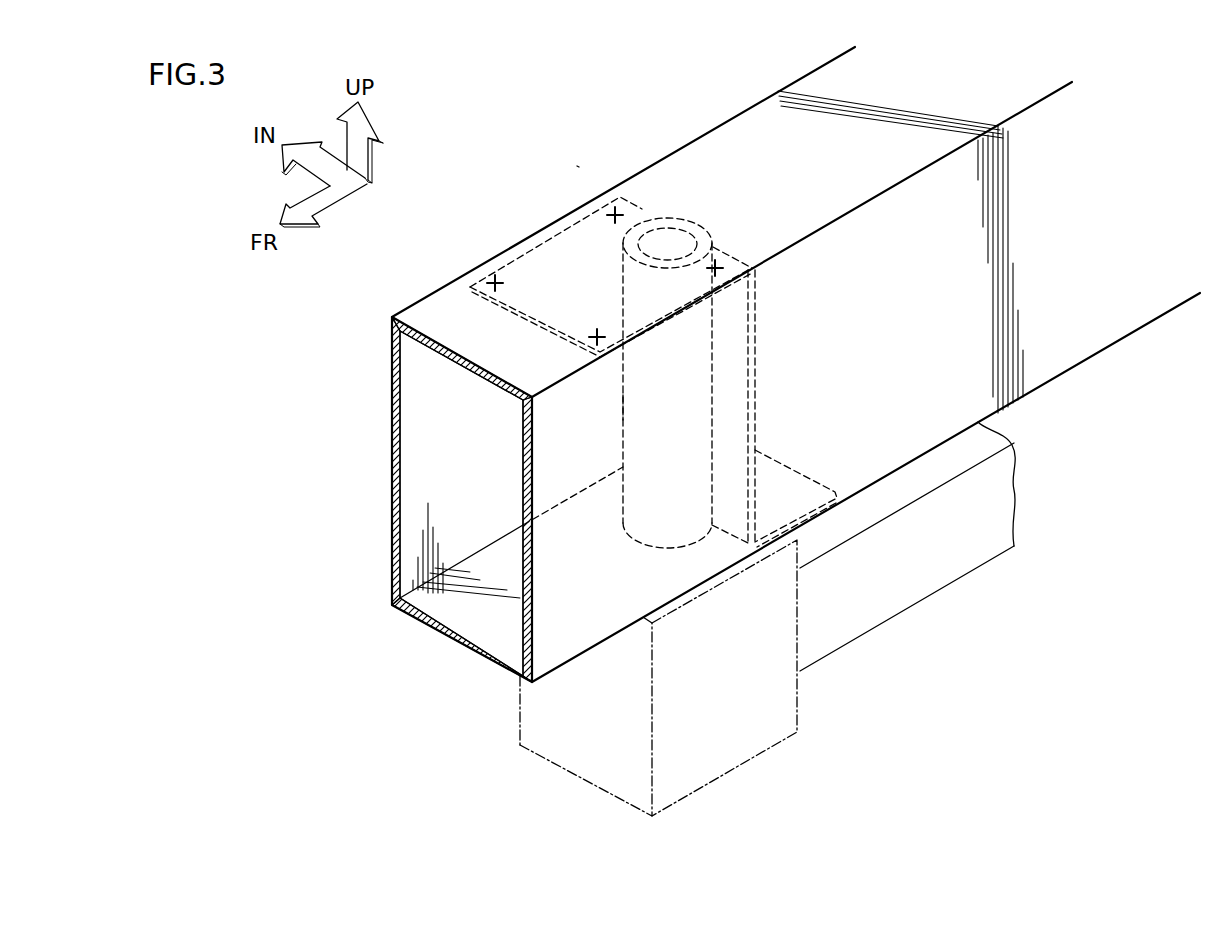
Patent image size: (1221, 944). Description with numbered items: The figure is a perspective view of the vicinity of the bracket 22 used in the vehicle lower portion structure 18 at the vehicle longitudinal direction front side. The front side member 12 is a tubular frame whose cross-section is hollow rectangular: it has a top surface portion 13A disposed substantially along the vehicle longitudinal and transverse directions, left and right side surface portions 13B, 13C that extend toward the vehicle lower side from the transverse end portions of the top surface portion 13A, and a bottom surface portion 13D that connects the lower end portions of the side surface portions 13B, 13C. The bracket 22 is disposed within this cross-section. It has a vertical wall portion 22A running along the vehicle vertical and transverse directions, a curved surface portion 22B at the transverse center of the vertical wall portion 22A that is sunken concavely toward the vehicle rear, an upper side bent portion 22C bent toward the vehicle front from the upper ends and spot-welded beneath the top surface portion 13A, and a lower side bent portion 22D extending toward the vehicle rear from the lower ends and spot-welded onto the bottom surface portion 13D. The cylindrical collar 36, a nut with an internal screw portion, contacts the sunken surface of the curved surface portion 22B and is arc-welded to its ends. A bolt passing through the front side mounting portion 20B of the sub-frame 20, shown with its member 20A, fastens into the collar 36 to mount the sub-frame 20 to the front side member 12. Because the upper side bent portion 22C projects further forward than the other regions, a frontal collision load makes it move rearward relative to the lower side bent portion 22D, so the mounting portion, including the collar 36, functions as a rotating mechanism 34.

The front side member 12 is at (741, 110).
The top surface portion 13A is at (712, 160).
The side surface portion 13B is at (420, 444).
The side surface portion 13C is at (547, 473).
The bottom surface portion 13D is at (487, 623).
The vehicle lower portion structure 18 is at (576, 164).
The sub-frame 20 is at (910, 615).
The support bar 20A is at (907, 546).
The front side mounting portion 20B is at (789, 708).
The bracket 22 is at (763, 364).
The vertical wall portion 22A is at (738, 408).
The curved surface portion 22B is at (708, 216).
The upper side bent portion 22C is at (555, 253).
The lower side bent portion 22D is at (801, 488).
The rotating mechanism 34 is at (671, 340).
The collar 36 is at (640, 406).